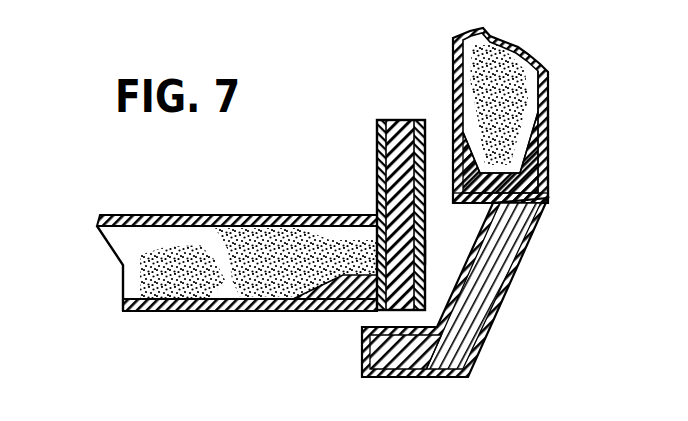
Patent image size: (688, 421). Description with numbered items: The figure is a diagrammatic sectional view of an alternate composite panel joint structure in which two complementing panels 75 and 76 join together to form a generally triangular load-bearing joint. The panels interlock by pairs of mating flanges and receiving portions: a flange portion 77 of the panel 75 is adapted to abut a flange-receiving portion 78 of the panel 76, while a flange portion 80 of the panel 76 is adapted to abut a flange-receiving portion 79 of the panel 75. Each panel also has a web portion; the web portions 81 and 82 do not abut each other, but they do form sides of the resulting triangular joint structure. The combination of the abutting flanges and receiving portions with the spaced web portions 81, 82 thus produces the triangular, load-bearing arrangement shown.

The panel 75 is at (552, 263).
The panel 76 is at (266, 191).
The flange portion 77 is at (487, 321).
The flange-receiving portion 78 is at (326, 312).
The flange-receiving portion 79 is at (452, 128).
The flange portion 80 is at (399, 126).
The web portion 81 is at (477, 205).
The web portion 82 is at (426, 252).